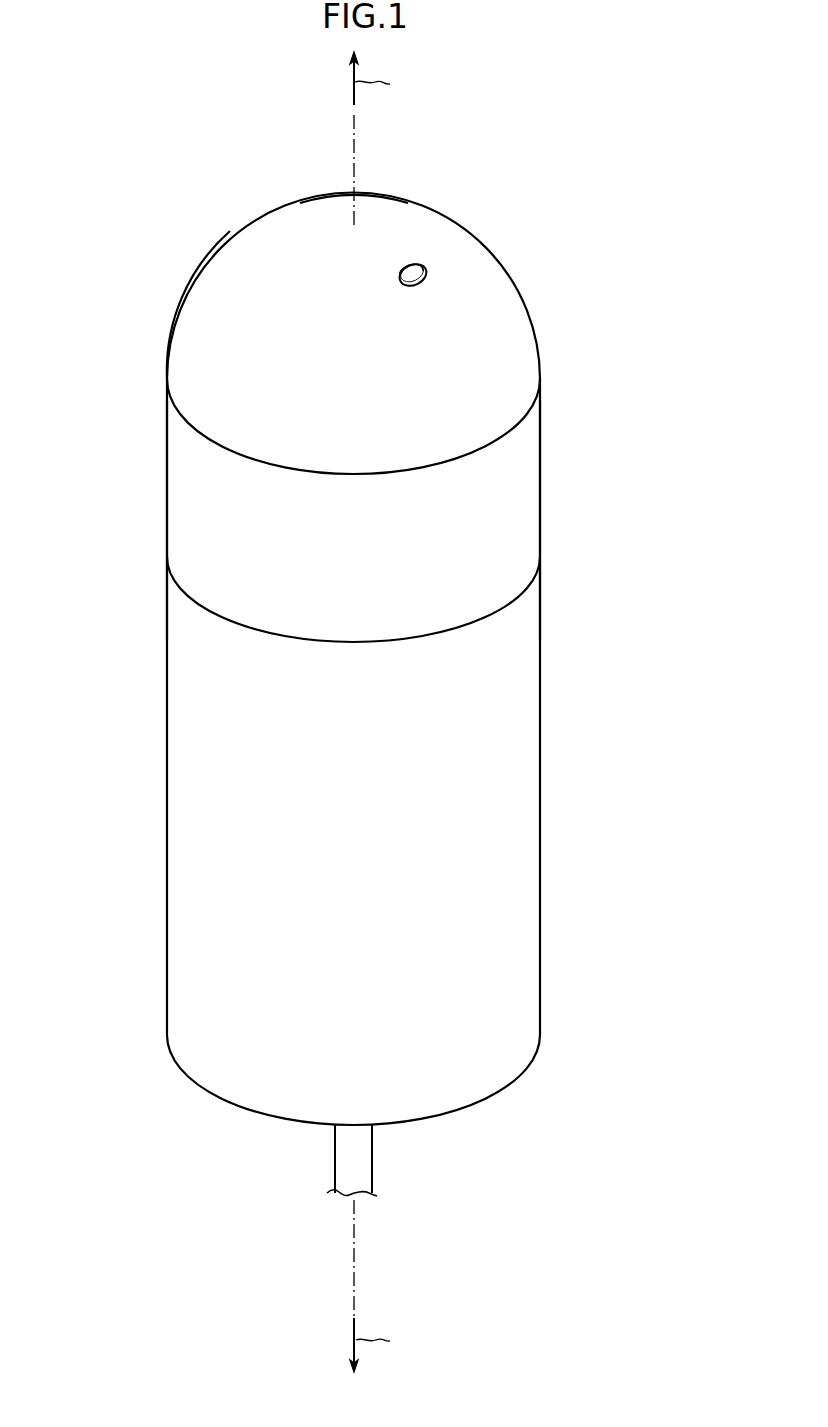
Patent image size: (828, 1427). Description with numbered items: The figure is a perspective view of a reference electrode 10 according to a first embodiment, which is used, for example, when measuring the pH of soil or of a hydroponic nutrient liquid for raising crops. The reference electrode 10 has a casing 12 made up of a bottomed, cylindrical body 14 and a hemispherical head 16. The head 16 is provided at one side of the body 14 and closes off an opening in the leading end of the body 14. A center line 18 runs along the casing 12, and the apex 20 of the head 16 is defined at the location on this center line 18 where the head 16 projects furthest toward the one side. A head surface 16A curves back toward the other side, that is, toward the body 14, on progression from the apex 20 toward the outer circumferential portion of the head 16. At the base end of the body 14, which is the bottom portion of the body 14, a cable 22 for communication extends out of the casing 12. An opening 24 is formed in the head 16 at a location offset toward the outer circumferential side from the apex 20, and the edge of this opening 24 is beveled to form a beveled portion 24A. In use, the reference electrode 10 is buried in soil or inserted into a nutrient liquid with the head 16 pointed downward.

The reference electrode 10 is at (372, 712).
The casing 12 is at (368, 627).
The body 14 is at (399, 521).
The head 16 is at (521, 366).
The head surface 16A is at (197, 355).
The center line 18 is at (350, 137).
The apex 20 is at (360, 224).
The cable 22 is at (373, 1168).
The opening 24 is at (462, 218).
The beveled portion 24A is at (421, 270).